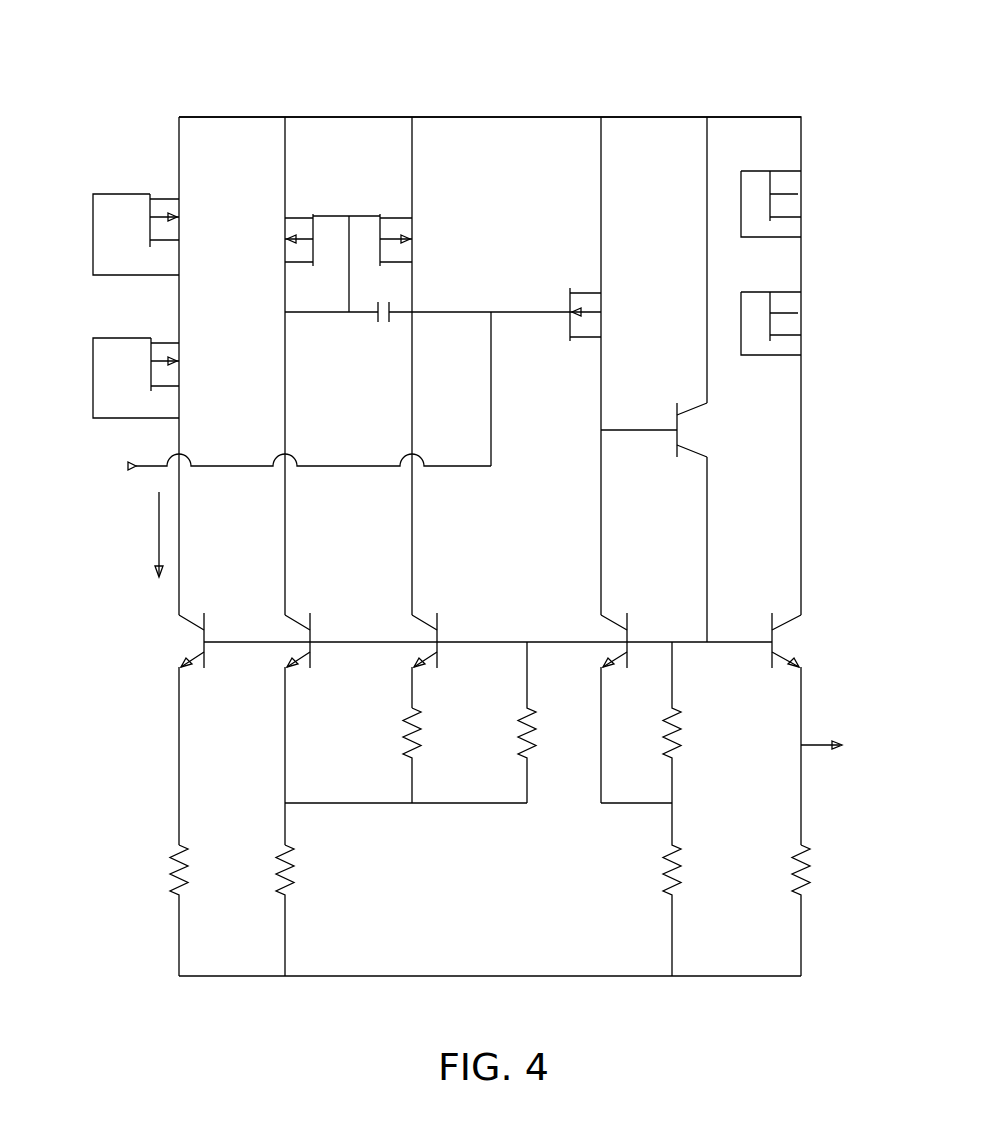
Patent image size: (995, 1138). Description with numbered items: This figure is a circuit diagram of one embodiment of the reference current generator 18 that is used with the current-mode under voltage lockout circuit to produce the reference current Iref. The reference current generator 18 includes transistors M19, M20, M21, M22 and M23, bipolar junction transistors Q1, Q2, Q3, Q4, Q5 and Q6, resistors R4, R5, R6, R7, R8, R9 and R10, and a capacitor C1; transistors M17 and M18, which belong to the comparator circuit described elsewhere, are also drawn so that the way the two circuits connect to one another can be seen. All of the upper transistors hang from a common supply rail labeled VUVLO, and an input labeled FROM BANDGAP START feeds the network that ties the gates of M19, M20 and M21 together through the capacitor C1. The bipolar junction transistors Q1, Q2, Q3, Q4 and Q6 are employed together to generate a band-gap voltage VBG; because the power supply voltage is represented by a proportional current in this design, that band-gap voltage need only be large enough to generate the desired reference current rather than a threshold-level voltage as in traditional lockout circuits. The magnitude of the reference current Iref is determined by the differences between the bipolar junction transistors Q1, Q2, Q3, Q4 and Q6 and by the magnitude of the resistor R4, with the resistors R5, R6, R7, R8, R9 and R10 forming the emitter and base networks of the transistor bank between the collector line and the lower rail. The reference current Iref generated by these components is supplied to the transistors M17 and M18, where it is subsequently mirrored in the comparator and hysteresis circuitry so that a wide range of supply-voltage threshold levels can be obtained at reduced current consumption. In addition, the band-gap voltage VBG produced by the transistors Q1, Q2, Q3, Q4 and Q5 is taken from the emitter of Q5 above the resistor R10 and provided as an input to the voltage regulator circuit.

The reference current generator 18 is at (309, 71).
The transistor M17 is at (136, 220).
The transistor M18 is at (136, 364).
The transistor M19 is at (305, 263).
The transistor M20 is at (424, 240).
The transistor M21 is at (612, 314).
The transistor M22 is at (799, 204).
The transistor M23 is at (799, 323).
The capacitor C1 is at (427, 384).
The bipolar junction transistor Q1 is at (198, 715).
The bipolar junction transistor Q2 is at (305, 715).
The bipolar junction transistor Q3 is at (431, 647).
The bipolar junction transistor Q4 is at (620, 694).
The bipolar junction transistor Q5 is at (802, 729).
The bipolar junction transistor Q6 is at (654, 415).
The resistor R4 is at (159, 910).
The resistor R5 is at (265, 910).
The resistor R6 is at (391, 755).
The resistor R7 is at (509, 722).
The resistor R8 is at (691, 722).
The resistor R9 is at (692, 889).
The resistor R10 is at (825, 910).
The undervoltage lockout supply rail VUVLO is at (490, 102).
The band-gap voltage VBG is at (843, 747).
The reference current Iref is at (140, 534).
The from bandgap start input BANDGAP is at (255, 467).